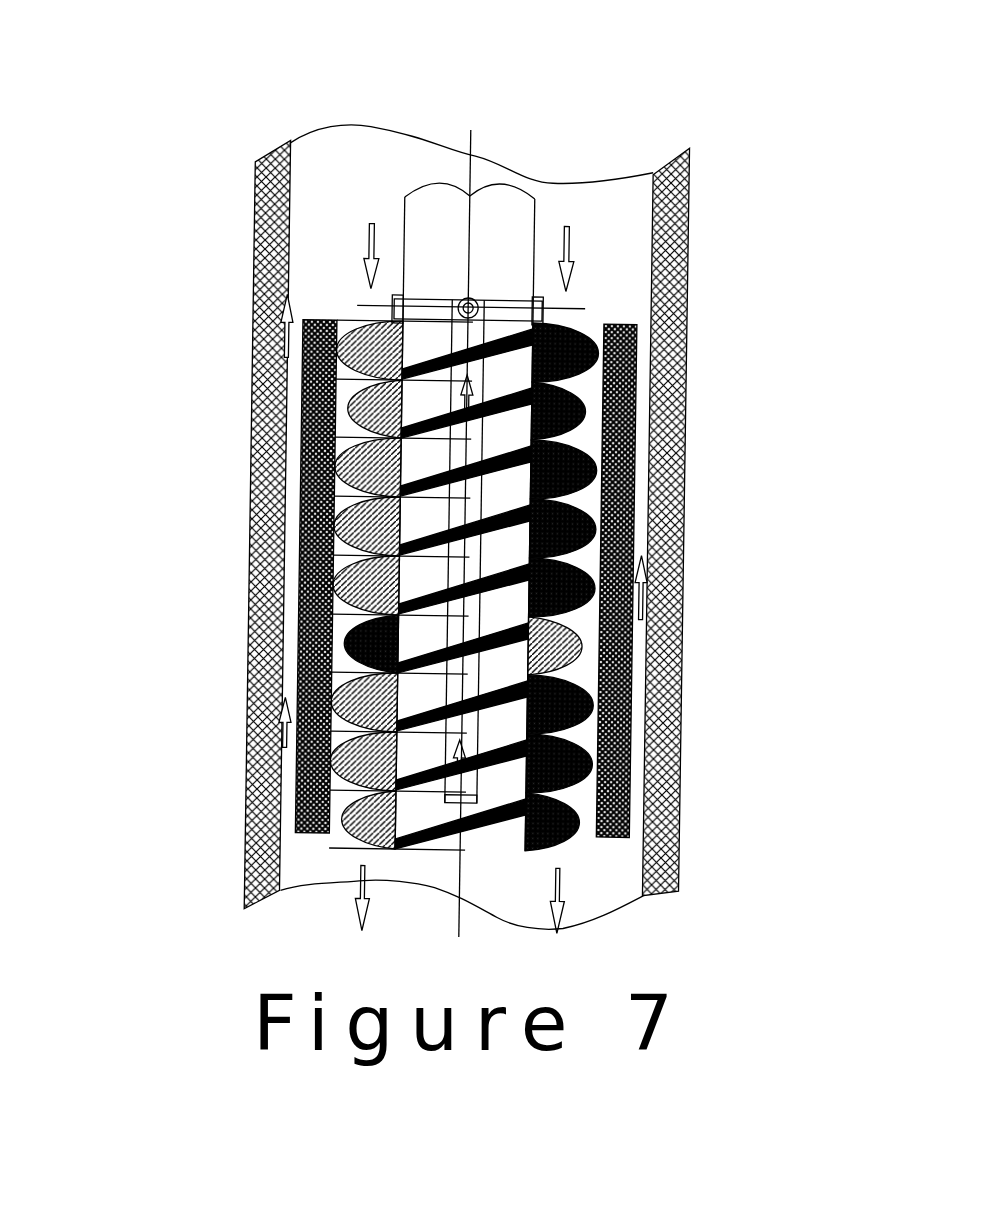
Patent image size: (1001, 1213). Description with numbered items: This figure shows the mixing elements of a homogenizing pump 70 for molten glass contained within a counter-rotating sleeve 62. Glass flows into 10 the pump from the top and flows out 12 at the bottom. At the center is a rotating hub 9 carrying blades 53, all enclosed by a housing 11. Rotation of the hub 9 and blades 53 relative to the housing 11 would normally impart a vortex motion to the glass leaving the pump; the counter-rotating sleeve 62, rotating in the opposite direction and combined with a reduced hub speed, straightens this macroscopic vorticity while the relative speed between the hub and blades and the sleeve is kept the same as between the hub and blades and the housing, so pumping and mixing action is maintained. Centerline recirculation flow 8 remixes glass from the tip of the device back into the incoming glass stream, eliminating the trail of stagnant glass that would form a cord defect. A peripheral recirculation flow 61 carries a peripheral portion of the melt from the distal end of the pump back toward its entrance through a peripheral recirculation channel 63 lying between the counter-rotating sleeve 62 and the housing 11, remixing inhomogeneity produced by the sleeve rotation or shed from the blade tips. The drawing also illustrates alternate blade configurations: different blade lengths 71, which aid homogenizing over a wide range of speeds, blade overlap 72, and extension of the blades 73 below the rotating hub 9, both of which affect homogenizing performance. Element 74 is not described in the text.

The homogenizing pump 70 is at (348, 92).
The glass inflow 10 is at (565, 262).
The glass outflow 12 is at (548, 903).
The rotating hub 9 is at (613, 483).
The housing 11 is at (567, 527).
The counter-rotating sleeve 62 is at (736, 573).
The peripheral recirculation channel 63 is at (185, 576).
The different blade lengths 71 is at (492, 403).
The blade overlap 72 is at (285, 533).
The centerline recirculation flow 8 is at (590, 456).
The flight section 74 is at (702, 659).
The blades 53 is at (597, 585).
The extension of the blades 73 is at (700, 877).
The peripheral recirculation flow 61 is at (645, 588).